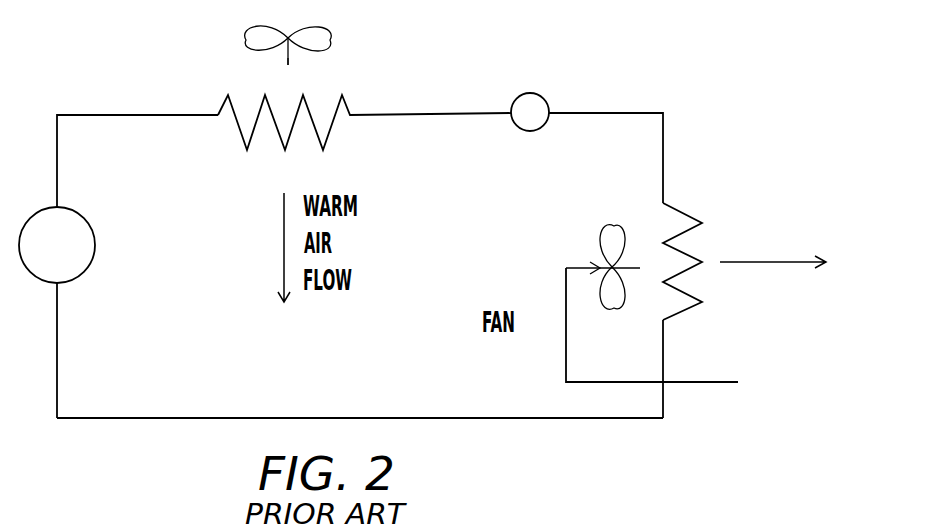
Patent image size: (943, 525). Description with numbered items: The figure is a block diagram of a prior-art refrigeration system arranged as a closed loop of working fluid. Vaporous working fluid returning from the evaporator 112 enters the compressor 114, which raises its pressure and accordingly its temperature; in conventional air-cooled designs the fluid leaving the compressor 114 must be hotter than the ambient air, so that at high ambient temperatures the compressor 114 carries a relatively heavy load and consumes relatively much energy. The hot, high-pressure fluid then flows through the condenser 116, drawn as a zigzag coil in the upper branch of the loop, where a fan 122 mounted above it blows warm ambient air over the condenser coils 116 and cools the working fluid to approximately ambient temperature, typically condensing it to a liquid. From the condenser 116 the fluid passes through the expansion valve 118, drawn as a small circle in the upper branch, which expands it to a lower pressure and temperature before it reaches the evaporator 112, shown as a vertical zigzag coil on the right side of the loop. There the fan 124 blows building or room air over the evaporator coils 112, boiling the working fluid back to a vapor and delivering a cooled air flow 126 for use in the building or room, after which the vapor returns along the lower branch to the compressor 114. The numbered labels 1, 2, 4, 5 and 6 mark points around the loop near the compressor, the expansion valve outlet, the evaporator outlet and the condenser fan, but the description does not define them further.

The state point 1 (compressor inlet) 1 is at (46, 350).
The state point 2 (compressor outlet) 2 is at (127, 161).
The state point 4 (expansion valve outlet) 4 is at (606, 140).
The state point 5 (evaporator outlet) 5 is at (678, 369).
The state point 6 (warm air) 6 is at (298, 34).
The evaporator 112 is at (700, 222).
The compressor 114 is at (91, 258).
The condenser 116 is at (345, 98).
The expansion valve 118 is at (540, 93).
The fan 122 is at (258, 38).
The fan 124 is at (602, 237).
The cooled air flow 126 is at (740, 263).